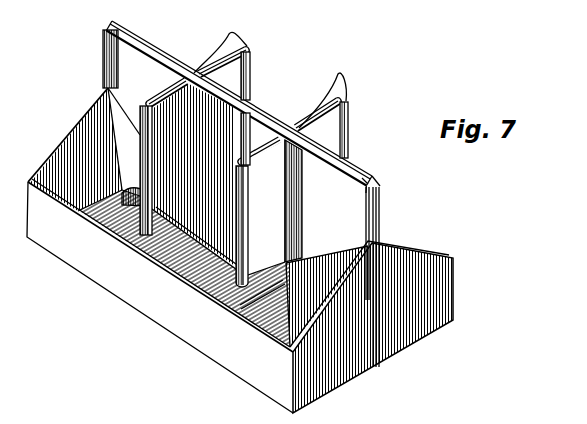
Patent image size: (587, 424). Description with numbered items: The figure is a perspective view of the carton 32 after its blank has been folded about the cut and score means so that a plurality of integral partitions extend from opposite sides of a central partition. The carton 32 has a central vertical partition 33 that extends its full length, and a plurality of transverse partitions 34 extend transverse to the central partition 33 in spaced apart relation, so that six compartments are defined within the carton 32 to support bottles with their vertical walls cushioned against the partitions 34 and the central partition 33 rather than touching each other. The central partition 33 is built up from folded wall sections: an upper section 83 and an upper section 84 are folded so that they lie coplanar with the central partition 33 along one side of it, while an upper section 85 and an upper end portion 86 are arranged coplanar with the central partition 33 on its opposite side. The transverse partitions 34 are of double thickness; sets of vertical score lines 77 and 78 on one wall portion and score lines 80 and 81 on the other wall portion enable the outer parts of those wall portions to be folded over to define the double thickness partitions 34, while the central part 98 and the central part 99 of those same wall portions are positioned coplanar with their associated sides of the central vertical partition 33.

The carton 32 is at (359, 79).
The central vertical partition 33 is at (364, 178).
The transverse partitions 34 is at (250, 60).
The score lines 77 is at (185, 80).
The score lines 78 is at (262, 152).
The score lines 80 is at (221, 45).
The score lines 81 is at (327, 90).
The upper section 83 is at (108, 78).
The upper section 84 is at (353, 221).
The upper section 85 is at (150, 45).
The upper end portion 86 is at (379, 193).
The central part 98 is at (236, 127).
The central part 99 is at (268, 117).